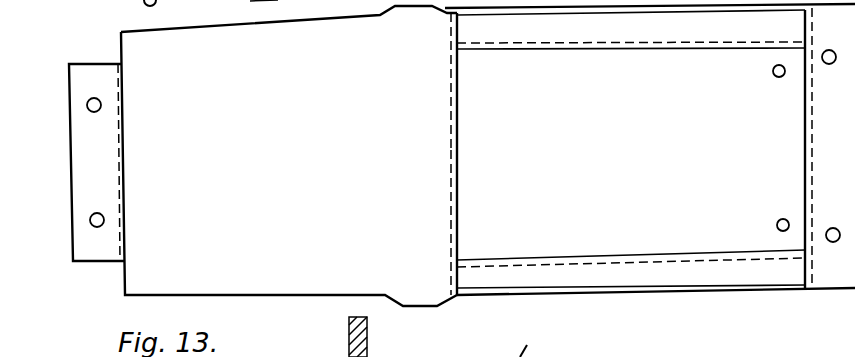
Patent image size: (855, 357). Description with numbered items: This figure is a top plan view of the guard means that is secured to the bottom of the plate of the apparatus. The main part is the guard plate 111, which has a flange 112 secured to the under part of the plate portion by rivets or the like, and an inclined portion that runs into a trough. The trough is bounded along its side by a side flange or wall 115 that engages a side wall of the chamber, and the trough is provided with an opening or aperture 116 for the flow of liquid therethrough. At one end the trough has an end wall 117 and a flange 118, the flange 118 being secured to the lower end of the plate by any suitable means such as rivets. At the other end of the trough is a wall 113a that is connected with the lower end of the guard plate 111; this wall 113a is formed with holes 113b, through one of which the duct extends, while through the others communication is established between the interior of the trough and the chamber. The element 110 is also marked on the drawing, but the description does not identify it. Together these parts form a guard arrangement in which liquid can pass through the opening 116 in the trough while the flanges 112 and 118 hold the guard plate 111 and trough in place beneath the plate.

The bottom channel of panel 110 is at (630, 242).
The guard plate 111 is at (338, 160).
The flange 112 is at (92, 183).
The wall 113a is at (516, 152).
The holes 113b is at (520, 210).
The side flange 115 is at (592, 25).
The opening 116 is at (777, 78).
The end wall 117 is at (797, 170).
The flange 118 is at (838, 274).